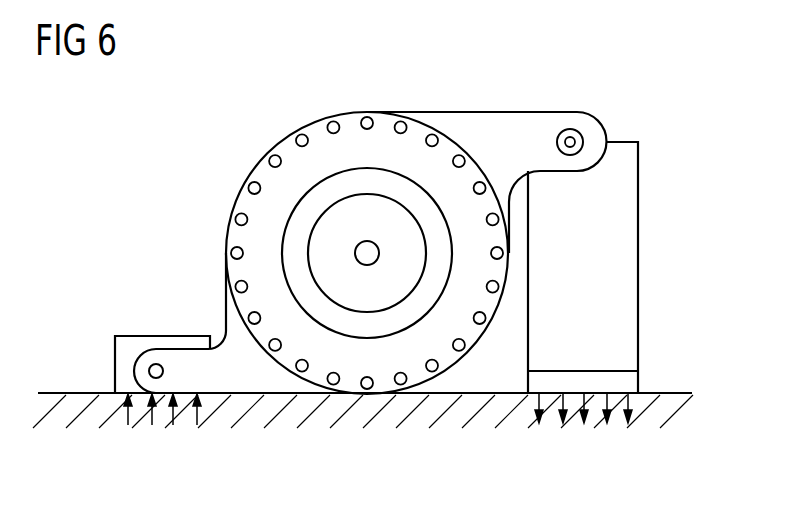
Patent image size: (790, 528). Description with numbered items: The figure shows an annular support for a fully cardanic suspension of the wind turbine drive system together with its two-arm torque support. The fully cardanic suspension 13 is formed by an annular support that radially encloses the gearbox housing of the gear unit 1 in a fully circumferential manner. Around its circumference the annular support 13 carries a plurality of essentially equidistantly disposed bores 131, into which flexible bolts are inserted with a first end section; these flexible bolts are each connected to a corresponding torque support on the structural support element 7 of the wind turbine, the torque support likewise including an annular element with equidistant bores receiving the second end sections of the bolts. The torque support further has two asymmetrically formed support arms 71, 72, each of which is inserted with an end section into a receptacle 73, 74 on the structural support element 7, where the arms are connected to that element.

The gear unit 1 is at (309, 184).
The fully cardanic suspension 13 is at (367, 265).
The bores 131 is at (333, 121).
The structural support element 7 is at (679, 402).
The support arm 71 is at (175, 348).
The support arm 72 is at (543, 111).
The receptacle 73 is at (135, 373).
The receptacle 74 is at (639, 233).